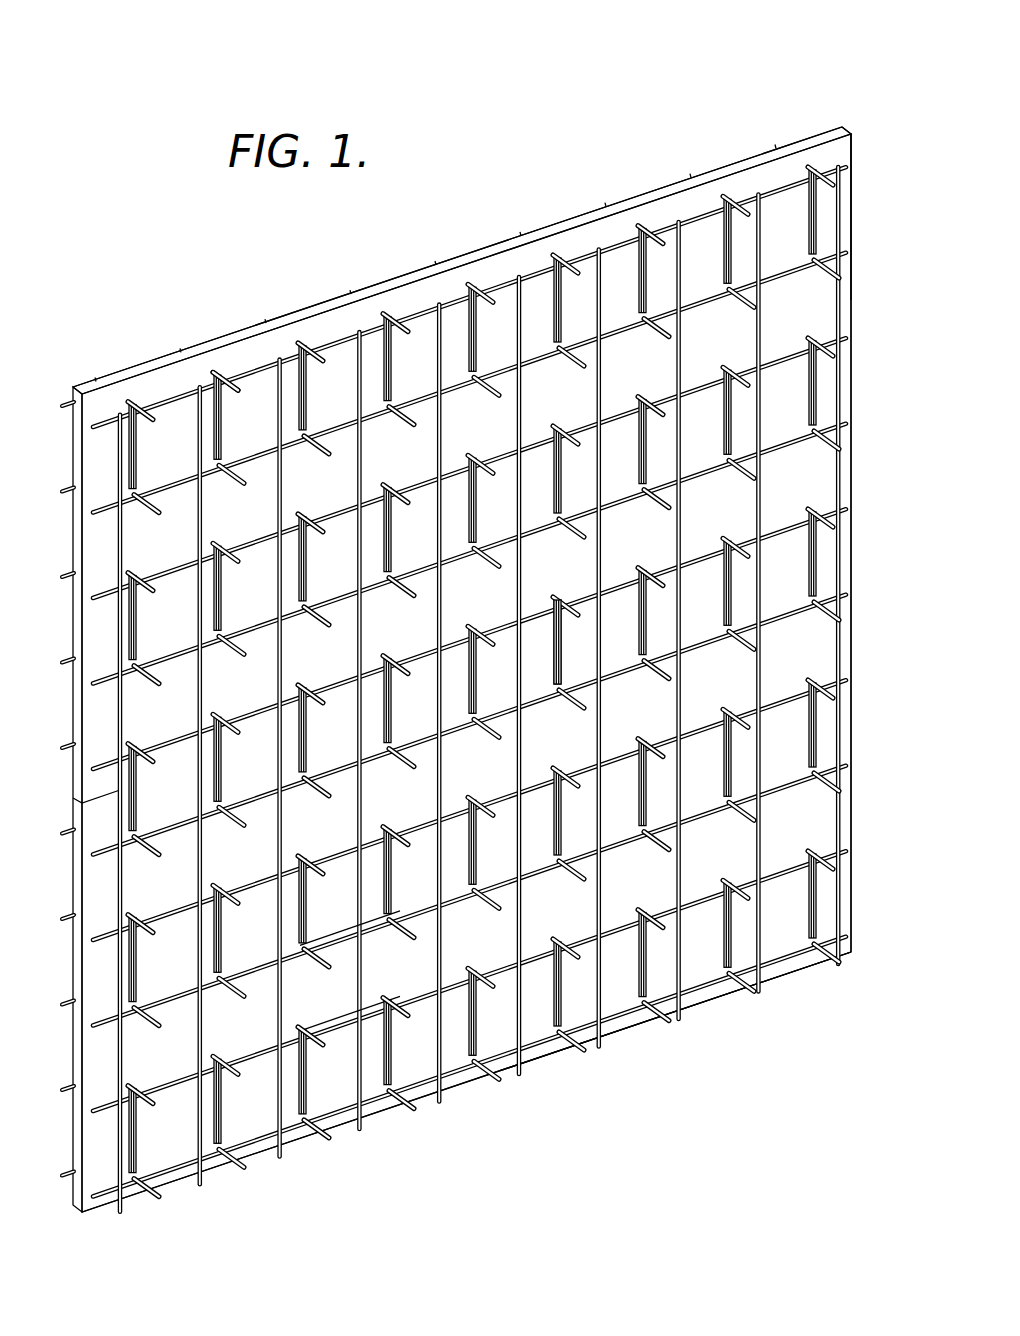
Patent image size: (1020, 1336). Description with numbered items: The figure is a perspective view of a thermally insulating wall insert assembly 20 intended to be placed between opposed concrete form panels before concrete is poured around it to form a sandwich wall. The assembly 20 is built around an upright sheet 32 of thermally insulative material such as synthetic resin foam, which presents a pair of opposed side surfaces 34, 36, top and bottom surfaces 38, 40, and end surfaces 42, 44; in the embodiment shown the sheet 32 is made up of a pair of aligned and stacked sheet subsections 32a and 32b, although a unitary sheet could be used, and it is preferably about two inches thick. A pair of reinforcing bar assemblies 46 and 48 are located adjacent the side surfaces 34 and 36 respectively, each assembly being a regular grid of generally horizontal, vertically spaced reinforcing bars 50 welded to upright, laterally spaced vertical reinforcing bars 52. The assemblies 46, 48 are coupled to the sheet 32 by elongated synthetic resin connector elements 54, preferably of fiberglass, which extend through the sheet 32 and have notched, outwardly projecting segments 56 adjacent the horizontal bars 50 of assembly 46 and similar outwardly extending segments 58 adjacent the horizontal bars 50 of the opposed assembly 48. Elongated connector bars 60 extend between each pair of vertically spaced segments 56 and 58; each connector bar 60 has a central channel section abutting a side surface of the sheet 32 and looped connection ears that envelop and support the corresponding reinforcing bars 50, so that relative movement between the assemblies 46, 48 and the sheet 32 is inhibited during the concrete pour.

The insert assembly 20 is at (467, 629).
The sheet 32 is at (467, 629).
The sheet subsection 32a is at (848, 150).
The sheet subsection 32b is at (712, 995).
The side surface 34 is at (767, 172).
The side surface 36 is at (748, 155).
The top surface 38 is at (413, 278).
The bottom surface 40 is at (532, 1063).
The end surface 42 is at (77, 862).
The end surface 44 is at (853, 793).
The reinforcing bar assembly 46 is at (449, 689).
The reinforcing bar assembly 48 is at (57, 393).
The horizontally extending reinforcing bar 50 is at (336, 950).
The vertical reinforcing bar 52 is at (438, 782).
The connector element 54 is at (483, 682).
The outwardly projecting segment 56 is at (233, 388).
The outwardly extending segment 58 is at (184, 355).
The connector bar 60 is at (567, 663).